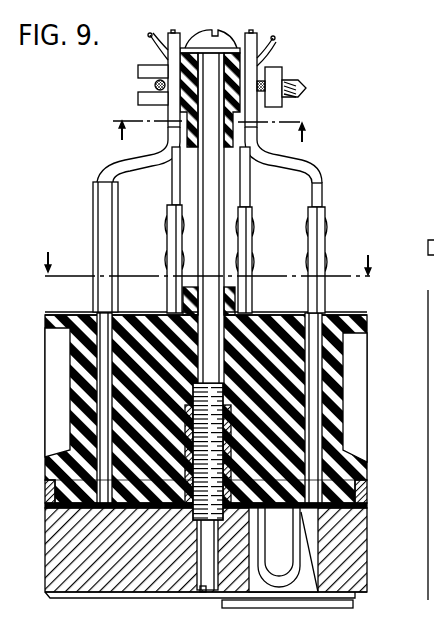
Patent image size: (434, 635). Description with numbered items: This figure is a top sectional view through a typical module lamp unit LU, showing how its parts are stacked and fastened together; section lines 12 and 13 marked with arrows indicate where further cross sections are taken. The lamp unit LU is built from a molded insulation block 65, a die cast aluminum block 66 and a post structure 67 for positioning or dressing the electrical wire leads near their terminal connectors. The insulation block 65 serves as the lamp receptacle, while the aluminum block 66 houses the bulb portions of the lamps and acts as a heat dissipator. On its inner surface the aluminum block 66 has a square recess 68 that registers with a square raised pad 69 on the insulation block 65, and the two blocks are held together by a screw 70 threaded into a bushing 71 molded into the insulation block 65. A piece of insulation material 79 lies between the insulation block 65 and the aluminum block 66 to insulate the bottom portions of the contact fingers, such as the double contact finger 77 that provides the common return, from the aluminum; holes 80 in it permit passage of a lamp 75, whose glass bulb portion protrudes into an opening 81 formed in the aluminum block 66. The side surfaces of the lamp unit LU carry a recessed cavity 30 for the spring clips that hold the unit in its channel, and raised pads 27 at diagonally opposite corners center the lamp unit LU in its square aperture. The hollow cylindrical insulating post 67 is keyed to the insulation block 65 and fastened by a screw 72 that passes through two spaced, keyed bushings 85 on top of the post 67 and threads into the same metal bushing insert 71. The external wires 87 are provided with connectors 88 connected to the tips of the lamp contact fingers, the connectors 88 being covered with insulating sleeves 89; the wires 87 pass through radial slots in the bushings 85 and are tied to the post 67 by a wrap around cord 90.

The external wires 87 is at (168, 36).
The screw 72 is at (218, 40).
The bushings 85 is at (138, 70).
The wrap around cord 90 is at (292, 88).
The section line 13 is at (215, 124).
The insulating sleeves 89 is at (100, 210).
The post structure 67 is at (222, 190).
The connectors 88 is at (170, 238).
The section line 12 is at (209, 272).
The lamp unit LU is at (335, 319).
The double contact finger 77 is at (100, 355).
The insulation block 65 is at (335, 378).
The recessed cavity 30 is at (55, 428).
The bushing 71 is at (245, 432).
The square raised pad 69 is at (362, 478).
The square recess 68 is at (356, 492).
The insulation material 79 is at (340, 505).
The aluminum block 66 is at (352, 552).
The screw 70 is at (194, 590).
The openings 81 is at (250, 575).
The lamp 75 is at (282, 573).
The holes 80 is at (318, 592).
The raised pads 27 is at (347, 601).